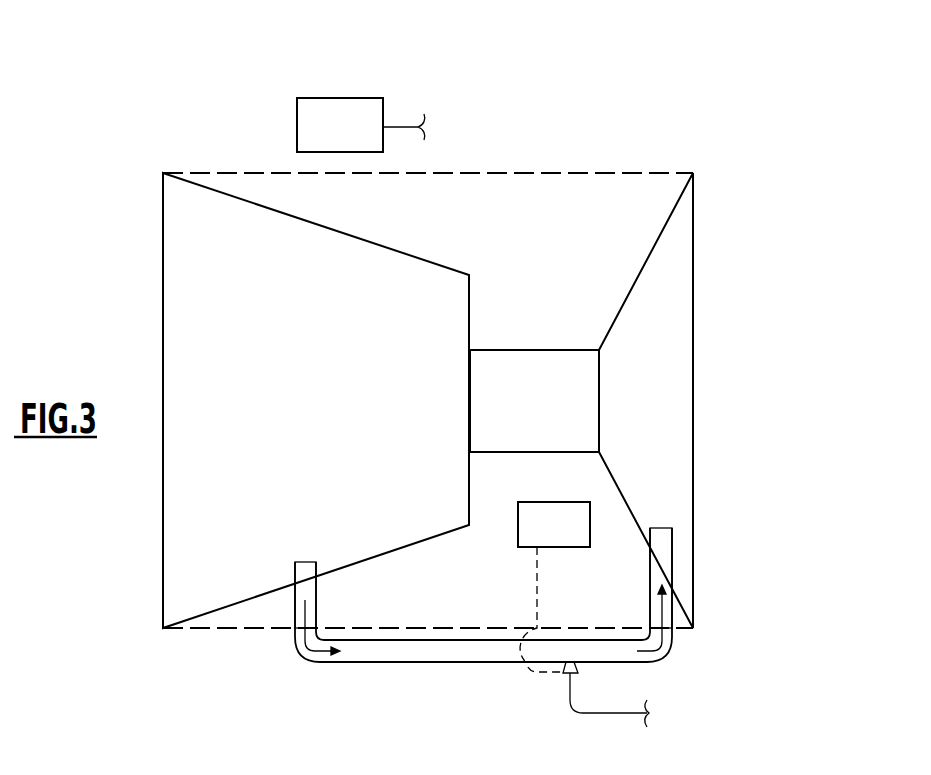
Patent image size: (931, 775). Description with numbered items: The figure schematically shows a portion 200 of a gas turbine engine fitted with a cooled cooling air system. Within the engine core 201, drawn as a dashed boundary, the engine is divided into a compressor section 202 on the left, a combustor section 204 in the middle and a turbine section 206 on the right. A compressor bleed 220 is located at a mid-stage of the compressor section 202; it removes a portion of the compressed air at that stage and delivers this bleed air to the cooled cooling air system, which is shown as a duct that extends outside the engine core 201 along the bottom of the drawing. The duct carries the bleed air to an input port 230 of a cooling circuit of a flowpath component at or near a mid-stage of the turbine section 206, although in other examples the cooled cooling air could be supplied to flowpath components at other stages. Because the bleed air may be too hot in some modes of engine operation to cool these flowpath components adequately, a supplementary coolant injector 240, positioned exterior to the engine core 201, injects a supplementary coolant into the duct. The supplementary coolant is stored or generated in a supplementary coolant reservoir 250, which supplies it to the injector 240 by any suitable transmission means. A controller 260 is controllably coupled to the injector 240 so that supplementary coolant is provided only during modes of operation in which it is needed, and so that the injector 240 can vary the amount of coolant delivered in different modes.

The portion of a gas turbine engine 200 is at (460, 397).
The engine core 201 is at (524, 173).
The compressor section 202 is at (333, 410).
The combustor section 204 is at (553, 410).
The turbine section 206 is at (666, 410).
The compressor bleed 220 is at (303, 572).
The input port 230 is at (668, 543).
The supplementary coolant injector 240 is at (578, 668).
The supplementary coolant reservoir 250 is at (360, 139).
The controller 260 is at (574, 539).